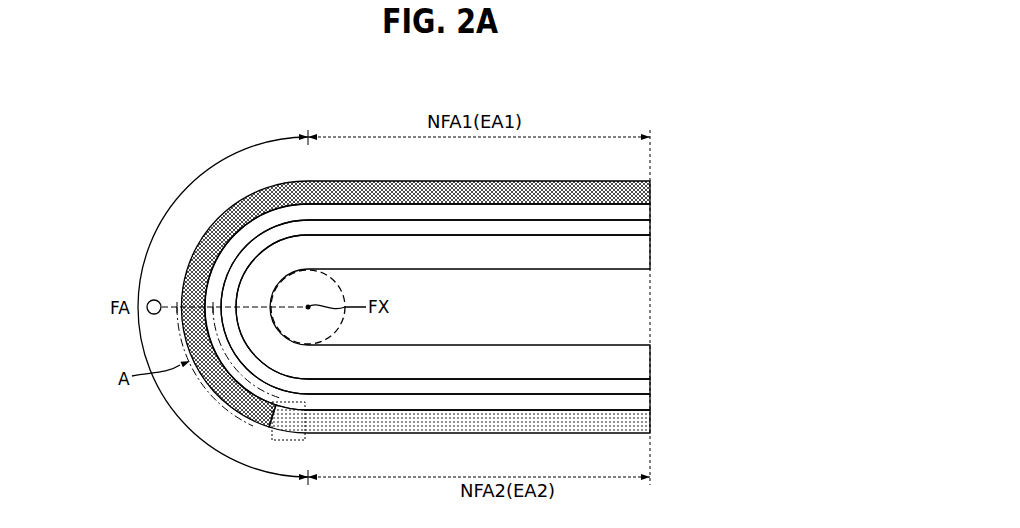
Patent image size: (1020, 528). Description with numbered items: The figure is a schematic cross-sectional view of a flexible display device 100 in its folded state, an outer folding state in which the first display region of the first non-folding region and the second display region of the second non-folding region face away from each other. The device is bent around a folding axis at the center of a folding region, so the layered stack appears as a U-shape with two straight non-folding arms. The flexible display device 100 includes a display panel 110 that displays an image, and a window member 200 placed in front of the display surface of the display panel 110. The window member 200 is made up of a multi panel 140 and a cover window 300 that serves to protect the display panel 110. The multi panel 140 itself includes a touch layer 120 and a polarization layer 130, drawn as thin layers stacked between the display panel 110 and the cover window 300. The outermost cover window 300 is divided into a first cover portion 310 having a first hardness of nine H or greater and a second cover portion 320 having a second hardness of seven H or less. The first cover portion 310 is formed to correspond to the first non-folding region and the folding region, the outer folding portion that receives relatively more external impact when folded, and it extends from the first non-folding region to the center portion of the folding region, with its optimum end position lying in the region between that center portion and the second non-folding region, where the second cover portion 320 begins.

The flexible display device 100 is at (644, 101).
The display panel 110 is at (632, 256).
The touch layer 120 is at (632, 232).
The polarization layer 130 is at (632, 214).
The multi panel 140 is at (726, 207).
The window member 200 is at (746, 192).
The cover window 300 is at (636, 190).
The first cover portion 310 is at (227, 403).
The second cover portion 320 is at (293, 425).